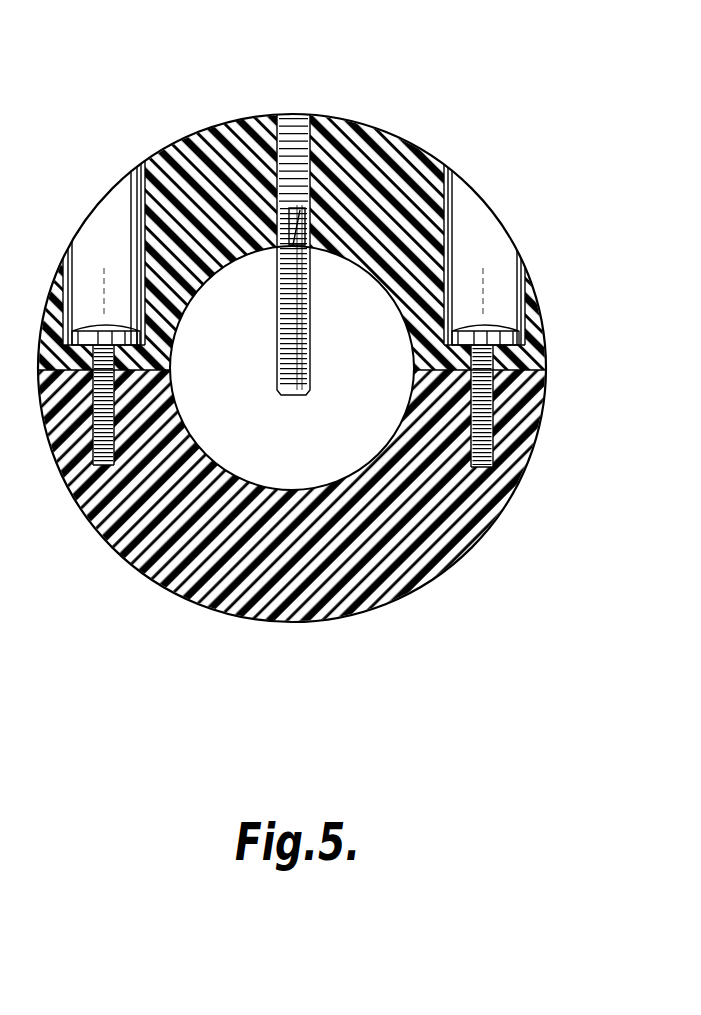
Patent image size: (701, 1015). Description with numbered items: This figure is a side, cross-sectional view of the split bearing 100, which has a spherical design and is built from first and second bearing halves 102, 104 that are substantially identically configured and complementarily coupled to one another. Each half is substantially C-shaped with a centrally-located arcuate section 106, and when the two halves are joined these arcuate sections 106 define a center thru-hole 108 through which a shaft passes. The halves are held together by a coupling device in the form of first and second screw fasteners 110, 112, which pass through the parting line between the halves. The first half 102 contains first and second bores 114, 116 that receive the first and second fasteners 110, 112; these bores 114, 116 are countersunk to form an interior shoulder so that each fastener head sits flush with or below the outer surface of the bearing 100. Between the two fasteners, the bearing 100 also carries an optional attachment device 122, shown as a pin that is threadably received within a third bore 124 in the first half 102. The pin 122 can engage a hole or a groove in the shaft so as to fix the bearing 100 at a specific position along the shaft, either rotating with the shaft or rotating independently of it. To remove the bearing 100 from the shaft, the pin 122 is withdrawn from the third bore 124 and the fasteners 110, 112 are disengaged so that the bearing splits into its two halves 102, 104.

The split bearing 100 is at (519, 116).
The first bearing half 102 is at (396, 129).
The second bearing half 104 is at (427, 586).
The arcuate section 106 is at (225, 262).
The center thru-hole 108 is at (364, 428).
The first screw fastener 110 is at (112, 322).
The second screw fastener 112 is at (489, 322).
The first bore 114 is at (62, 282).
The second bore 116 is at (445, 218).
The attachment device 122 is at (303, 240).
The third bore 124 is at (293, 114).